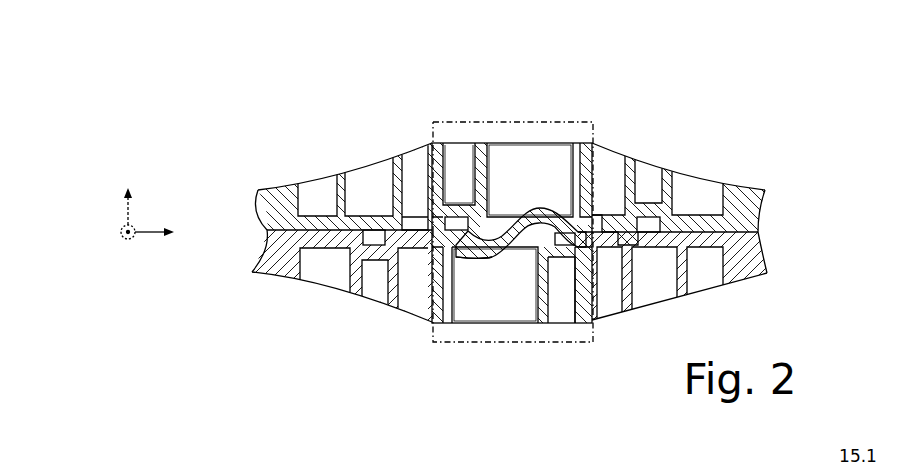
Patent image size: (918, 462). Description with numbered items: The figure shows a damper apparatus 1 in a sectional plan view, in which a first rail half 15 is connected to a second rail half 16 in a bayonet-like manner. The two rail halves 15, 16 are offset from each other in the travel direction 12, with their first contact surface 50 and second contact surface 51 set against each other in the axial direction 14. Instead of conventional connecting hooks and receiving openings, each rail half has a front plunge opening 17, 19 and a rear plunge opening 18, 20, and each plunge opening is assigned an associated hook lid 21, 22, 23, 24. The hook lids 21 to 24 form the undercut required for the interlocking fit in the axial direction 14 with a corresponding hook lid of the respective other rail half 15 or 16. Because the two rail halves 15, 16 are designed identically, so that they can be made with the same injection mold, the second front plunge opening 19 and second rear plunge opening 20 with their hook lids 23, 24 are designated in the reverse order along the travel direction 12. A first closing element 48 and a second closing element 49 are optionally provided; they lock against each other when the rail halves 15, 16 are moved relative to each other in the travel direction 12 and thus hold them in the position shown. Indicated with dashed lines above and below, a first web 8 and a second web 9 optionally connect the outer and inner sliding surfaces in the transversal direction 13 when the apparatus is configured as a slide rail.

The damper apparatus 1 is at (517, 220).
The first web 8 is at (548, 344).
The second web 9 is at (453, 121).
The travel direction 12 is at (148, 236).
The transversal direction 13 is at (122, 237).
The axial direction 14 is at (135, 204).
The first rail half 15 is at (472, 308).
The second rail half 16 is at (538, 155).
The front plunge opening 17 is at (373, 224).
The rear plunge opening 18 is at (568, 227).
The second front plunge opening 19 is at (647, 240).
The second rear plunge opening 20 is at (446, 237).
The hook lid 21 is at (425, 216).
The hook lid 22 is at (606, 224).
The hook lid 23 is at (603, 247).
The hook lid 24 is at (376, 247).
The first closing element 48 is at (478, 262).
The second closing element 49 is at (537, 207).
The first contact surface 50 is at (316, 225).
The second contact surface 51 is at (340, 245).